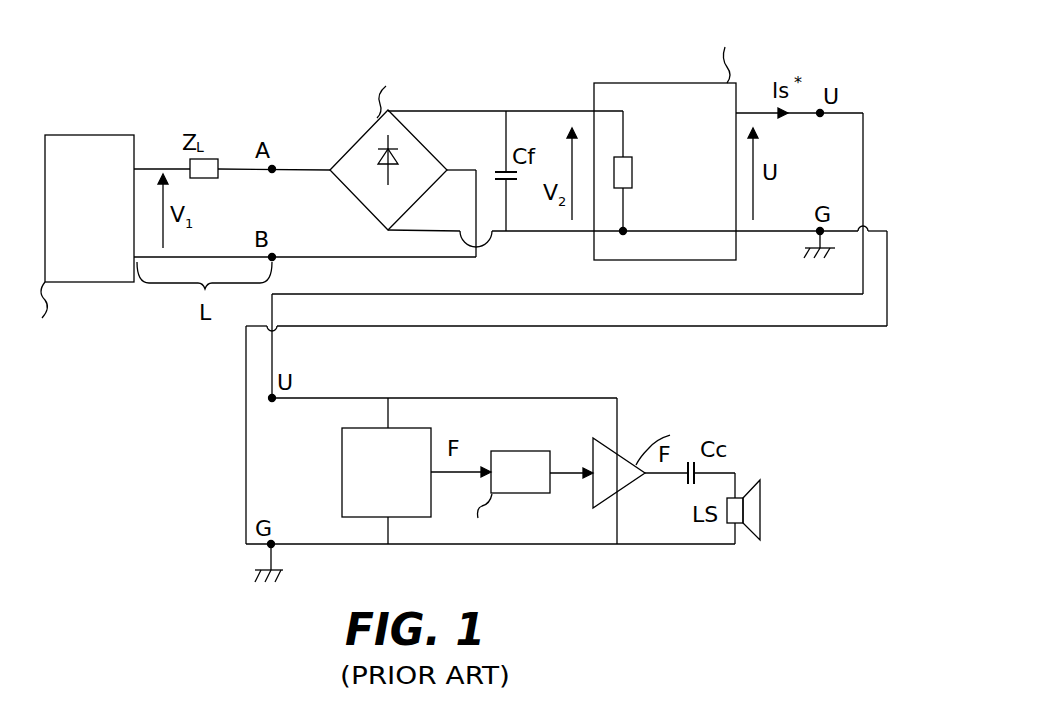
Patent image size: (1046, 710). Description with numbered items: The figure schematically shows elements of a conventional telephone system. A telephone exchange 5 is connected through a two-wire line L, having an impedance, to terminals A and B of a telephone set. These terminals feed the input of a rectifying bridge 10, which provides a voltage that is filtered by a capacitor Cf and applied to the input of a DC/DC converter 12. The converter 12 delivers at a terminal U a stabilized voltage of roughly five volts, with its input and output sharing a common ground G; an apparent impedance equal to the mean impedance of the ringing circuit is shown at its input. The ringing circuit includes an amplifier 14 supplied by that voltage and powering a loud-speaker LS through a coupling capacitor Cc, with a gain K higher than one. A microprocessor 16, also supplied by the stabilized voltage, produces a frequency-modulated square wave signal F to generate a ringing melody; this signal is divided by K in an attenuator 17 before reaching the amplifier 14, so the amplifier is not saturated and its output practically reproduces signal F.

The telephone exchange 5 is at (96, 136).
The rectifying bridge 10 is at (362, 132).
The DC/DC converter 12 is at (648, 83).
The amplifier 14 is at (626, 462).
The microprocessor 16 is at (342, 468).
The attenuator 17 is at (523, 451).